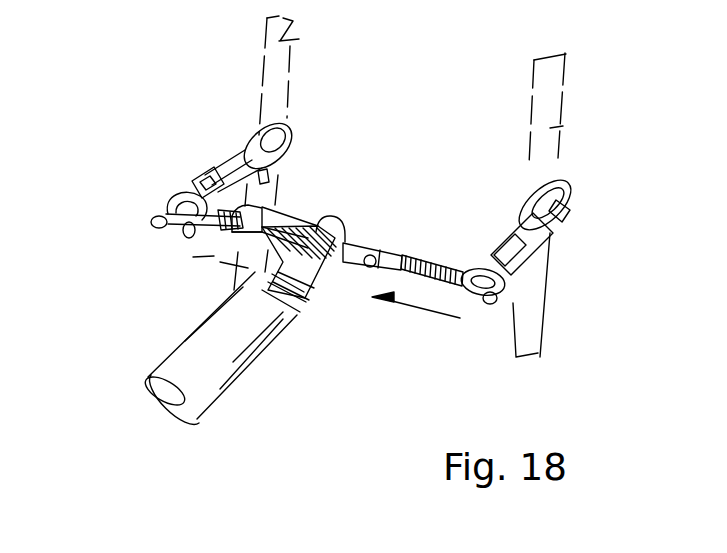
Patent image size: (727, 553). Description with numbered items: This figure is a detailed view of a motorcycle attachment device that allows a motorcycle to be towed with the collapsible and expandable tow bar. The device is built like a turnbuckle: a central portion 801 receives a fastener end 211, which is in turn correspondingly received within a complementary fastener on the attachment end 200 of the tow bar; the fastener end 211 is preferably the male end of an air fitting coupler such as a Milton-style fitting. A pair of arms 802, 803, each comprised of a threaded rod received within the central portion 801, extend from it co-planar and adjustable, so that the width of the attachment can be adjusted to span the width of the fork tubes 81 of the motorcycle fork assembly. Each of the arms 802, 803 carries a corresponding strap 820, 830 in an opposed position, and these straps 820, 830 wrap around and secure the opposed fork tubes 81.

The fork tube 81 is at (305, 34).
The strap 830 is at (227, 156).
The arm 803 is at (170, 200).
The fastener end 211 is at (322, 207).
The attachment end 200 is at (240, 365).
The central portion 801 is at (354, 240).
The arm 802 is at (427, 254).
The strap 820 is at (560, 203).